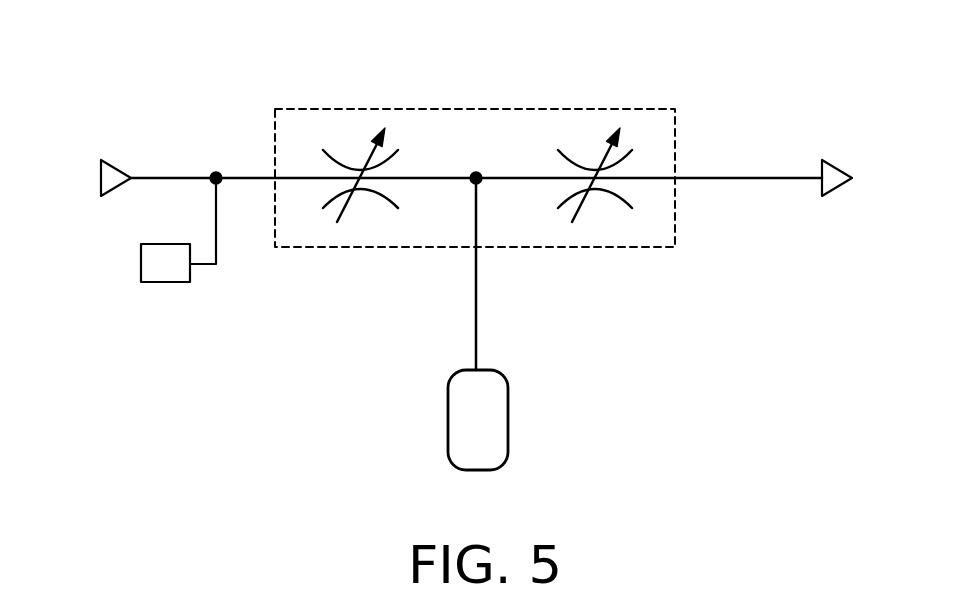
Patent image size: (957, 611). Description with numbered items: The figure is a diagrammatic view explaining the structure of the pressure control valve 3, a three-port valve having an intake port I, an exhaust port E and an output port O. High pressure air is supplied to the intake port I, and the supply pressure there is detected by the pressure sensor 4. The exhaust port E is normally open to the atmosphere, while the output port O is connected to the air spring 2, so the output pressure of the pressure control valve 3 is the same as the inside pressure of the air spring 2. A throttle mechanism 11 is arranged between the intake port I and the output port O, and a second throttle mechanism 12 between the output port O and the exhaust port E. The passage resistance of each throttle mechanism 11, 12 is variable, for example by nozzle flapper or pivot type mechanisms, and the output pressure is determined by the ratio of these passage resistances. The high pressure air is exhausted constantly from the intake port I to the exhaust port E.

The air spring 2 is at (508, 423).
The pressure control valve 3 is at (480, 108).
The pressure sensor 4 is at (160, 284).
The throttle mechanism 11 is at (338, 160).
The throttle mechanism 12 is at (572, 160).
The intake port I is at (276, 180).
The output port O is at (475, 249).
The exhaust port E is at (678, 180).